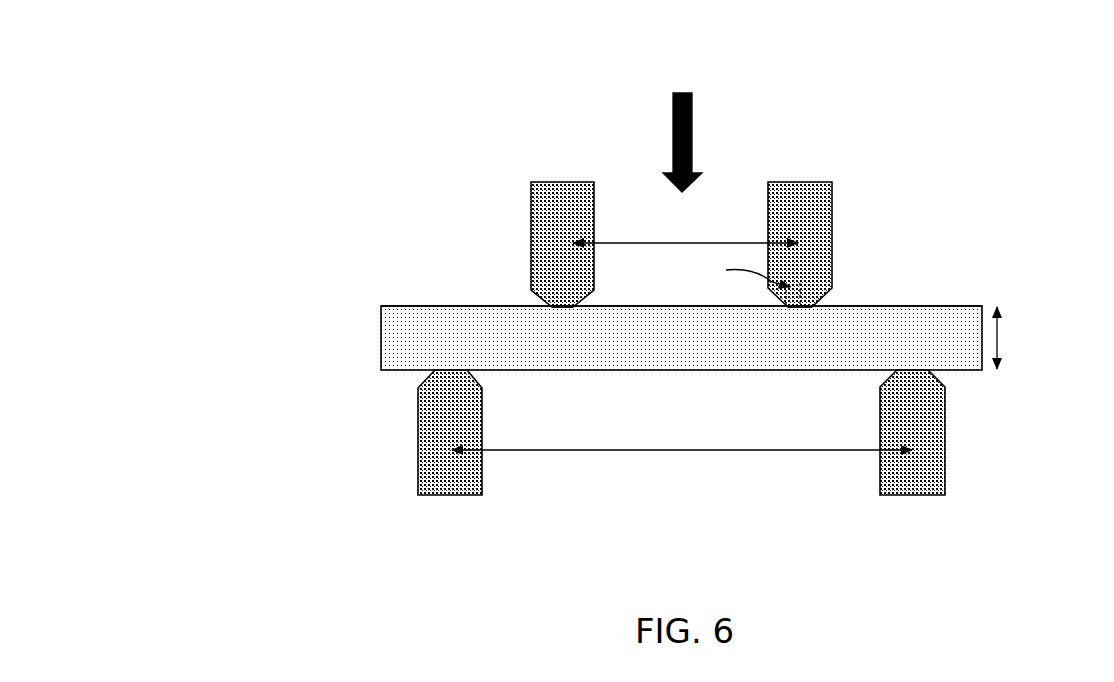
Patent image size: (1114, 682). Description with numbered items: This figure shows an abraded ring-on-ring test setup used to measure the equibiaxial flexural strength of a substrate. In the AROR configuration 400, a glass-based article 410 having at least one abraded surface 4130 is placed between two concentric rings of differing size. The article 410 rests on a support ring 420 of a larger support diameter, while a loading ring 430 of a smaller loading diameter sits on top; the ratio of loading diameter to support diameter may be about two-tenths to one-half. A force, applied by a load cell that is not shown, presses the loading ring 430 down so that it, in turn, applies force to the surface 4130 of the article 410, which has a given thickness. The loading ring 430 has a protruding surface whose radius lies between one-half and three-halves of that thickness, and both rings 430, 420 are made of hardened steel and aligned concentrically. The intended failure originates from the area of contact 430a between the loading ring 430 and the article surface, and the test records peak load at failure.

The AROR configuration 400 is at (707, 40).
The glass-based article 410 is at (378, 338).
The surface 4130 is at (408, 305).
The support ring 420 is at (415, 452).
The loading ring 430 is at (528, 216).
The area of contact 430a is at (562, 312).